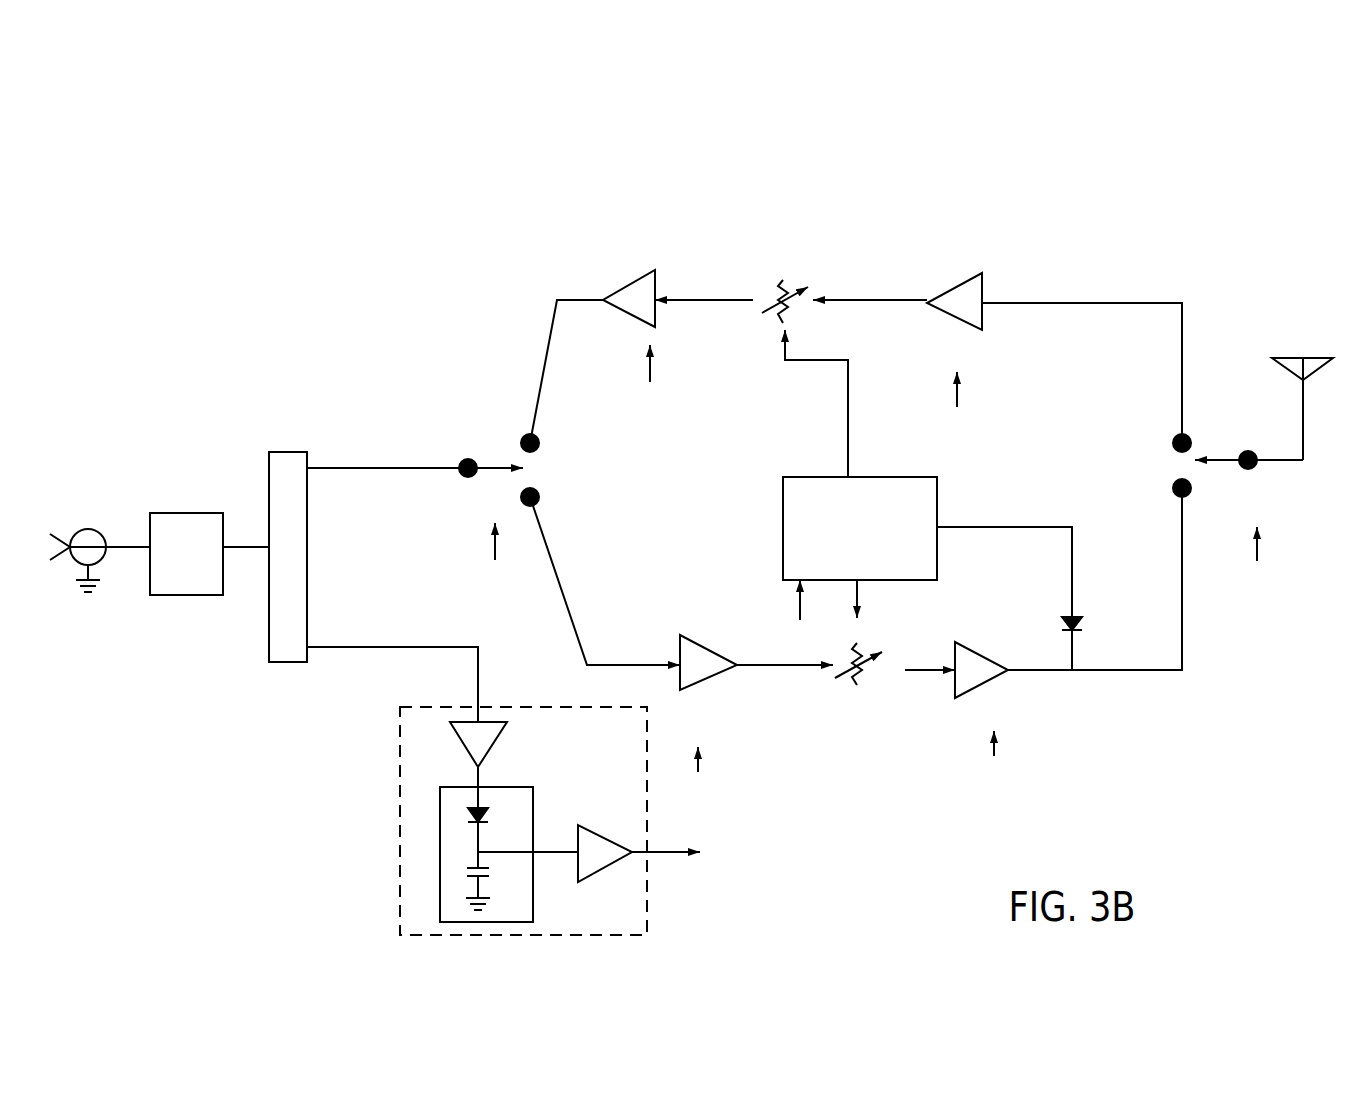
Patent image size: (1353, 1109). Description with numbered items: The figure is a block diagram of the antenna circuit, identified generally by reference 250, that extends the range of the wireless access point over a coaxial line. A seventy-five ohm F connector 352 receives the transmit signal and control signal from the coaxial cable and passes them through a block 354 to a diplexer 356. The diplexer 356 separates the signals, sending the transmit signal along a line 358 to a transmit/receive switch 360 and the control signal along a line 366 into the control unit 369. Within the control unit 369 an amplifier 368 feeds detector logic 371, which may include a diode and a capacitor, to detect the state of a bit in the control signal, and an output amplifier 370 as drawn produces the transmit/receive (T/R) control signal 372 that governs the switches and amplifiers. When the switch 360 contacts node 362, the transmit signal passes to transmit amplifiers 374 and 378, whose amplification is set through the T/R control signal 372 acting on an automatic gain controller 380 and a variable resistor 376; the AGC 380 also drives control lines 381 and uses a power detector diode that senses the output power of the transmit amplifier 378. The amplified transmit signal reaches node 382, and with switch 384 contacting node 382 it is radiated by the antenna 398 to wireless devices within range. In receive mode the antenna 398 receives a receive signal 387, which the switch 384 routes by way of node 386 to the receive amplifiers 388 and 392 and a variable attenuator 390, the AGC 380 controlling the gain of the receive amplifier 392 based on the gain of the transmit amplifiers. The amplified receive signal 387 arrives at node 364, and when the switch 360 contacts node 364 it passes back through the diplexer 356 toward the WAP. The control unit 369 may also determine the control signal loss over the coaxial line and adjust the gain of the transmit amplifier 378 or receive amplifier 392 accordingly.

The RF transceiver front-end 250 is at (873, 200).
The 75 ohm F connector 352 is at (82, 528).
The filter 354 is at (203, 557).
The diplexer 356 is at (305, 519).
The switch common line 358 is at (356, 470).
The transmit/receive switch 360 is at (488, 466).
The node 362 is at (540, 502).
The node 364 is at (540, 438).
The detector input line 366 is at (338, 649).
The detector amplifier 368 is at (494, 748).
The control unit 369 is at (399, 757).
The comparator amplifier 370 is at (618, 863).
The detector logic 371 is at (533, 787).
The transmit/receive (T/R) control signal 372 is at (874, 619).
The transmit amplifier 374 is at (722, 676).
The variable resistor 376 is at (872, 690).
The transmit amplifier 378 is at (995, 681).
The automatic gain controller (AGC) 380 is at (850, 540).
The attenuator control line 381 is at (848, 405).
The node 382 is at (1172, 492).
The switch 384 is at (1247, 452).
The antenna switch receive terminal 386 is at (1172, 446).
The receive signal 387 is at (1122, 303).
The receive amplifier 388 is at (976, 314).
The receive variable attenuator 390 is at (784, 280).
The receive amplifier 392 is at (649, 311).
The antenna 398 is at (1303, 358).